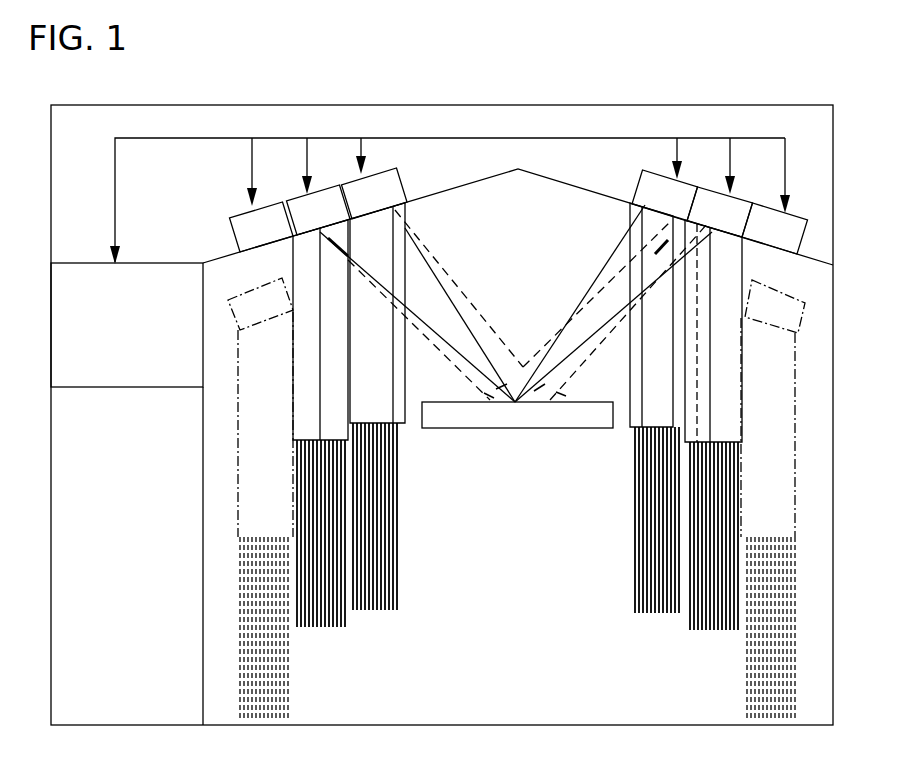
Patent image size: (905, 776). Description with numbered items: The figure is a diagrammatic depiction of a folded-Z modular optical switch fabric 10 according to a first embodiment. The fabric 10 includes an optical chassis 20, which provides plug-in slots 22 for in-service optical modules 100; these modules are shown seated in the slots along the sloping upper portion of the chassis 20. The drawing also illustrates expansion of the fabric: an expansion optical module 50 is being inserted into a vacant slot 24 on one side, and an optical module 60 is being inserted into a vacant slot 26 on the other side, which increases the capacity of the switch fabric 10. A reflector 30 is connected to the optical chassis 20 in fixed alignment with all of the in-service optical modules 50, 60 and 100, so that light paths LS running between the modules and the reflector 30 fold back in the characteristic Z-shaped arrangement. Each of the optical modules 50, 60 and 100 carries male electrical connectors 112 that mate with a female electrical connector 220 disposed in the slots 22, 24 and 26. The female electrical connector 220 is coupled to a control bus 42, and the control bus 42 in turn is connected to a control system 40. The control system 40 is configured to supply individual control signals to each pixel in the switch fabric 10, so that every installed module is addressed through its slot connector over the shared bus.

The folded-Z modular optical switch fabric 10 is at (796, 68).
The optical chassis 20 is at (586, 190).
The plug-in slots 22 is at (385, 160).
The vacant slot 24 is at (801, 226).
The vacant slot 26 is at (245, 225).
The reflector 30 is at (565, 429).
The control system 40 is at (112, 378).
The control bus 42 is at (114, 183).
The expansion optical module 50 is at (786, 452).
The optical module 60 is at (256, 458).
The in-service optical modules 100 is at (402, 414).
The male electrical connectors 112 is at (362, 184).
The female electrical connector 220 is at (340, 182).
The laser beam LS is at (436, 258).